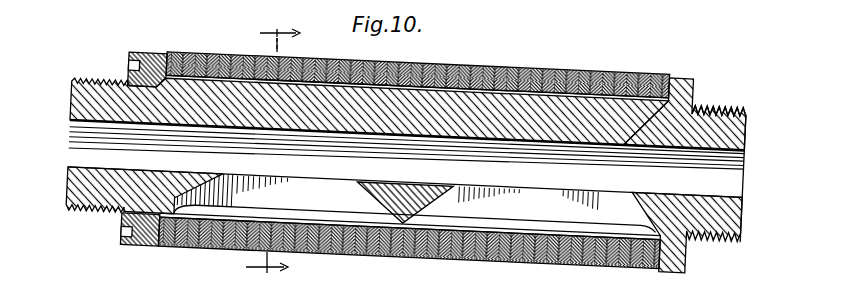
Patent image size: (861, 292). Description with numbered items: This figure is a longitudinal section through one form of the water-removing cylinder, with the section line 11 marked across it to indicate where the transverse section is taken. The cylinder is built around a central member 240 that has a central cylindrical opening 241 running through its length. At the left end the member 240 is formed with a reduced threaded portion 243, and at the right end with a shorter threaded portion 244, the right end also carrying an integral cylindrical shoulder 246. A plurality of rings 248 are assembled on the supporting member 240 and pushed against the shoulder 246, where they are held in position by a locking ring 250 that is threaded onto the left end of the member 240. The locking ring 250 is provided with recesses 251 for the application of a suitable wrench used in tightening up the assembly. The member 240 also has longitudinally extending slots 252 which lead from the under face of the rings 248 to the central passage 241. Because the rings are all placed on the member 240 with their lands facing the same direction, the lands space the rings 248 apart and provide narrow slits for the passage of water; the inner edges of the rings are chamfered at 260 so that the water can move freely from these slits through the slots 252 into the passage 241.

The section line 11— 11 is at (273, 148).
The central member 240 is at (713, 110).
The central cylindrical opening 241 is at (745, 160).
The reduced threaded portion 243 is at (80, 98).
The shorter threaded portion 244 is at (715, 233).
The integral cylindrical shoulder 246 is at (677, 78).
The rings 248 is at (545, 72).
The locking ring 250 is at (143, 243).
The recesses 251 is at (128, 63).
The longitudinally extending slots 252 is at (343, 202).
The chamfered inner edges 260 is at (585, 157).